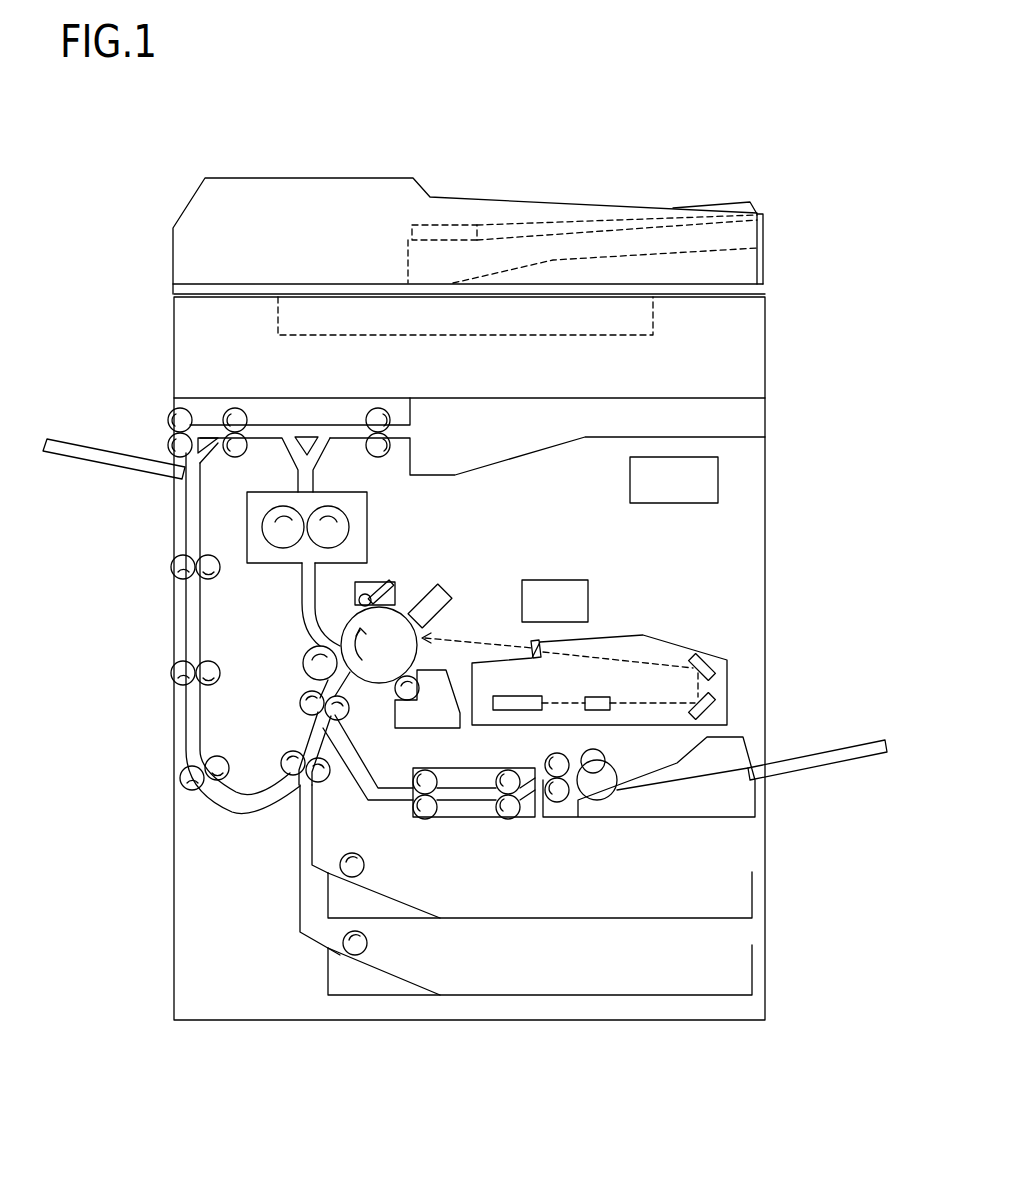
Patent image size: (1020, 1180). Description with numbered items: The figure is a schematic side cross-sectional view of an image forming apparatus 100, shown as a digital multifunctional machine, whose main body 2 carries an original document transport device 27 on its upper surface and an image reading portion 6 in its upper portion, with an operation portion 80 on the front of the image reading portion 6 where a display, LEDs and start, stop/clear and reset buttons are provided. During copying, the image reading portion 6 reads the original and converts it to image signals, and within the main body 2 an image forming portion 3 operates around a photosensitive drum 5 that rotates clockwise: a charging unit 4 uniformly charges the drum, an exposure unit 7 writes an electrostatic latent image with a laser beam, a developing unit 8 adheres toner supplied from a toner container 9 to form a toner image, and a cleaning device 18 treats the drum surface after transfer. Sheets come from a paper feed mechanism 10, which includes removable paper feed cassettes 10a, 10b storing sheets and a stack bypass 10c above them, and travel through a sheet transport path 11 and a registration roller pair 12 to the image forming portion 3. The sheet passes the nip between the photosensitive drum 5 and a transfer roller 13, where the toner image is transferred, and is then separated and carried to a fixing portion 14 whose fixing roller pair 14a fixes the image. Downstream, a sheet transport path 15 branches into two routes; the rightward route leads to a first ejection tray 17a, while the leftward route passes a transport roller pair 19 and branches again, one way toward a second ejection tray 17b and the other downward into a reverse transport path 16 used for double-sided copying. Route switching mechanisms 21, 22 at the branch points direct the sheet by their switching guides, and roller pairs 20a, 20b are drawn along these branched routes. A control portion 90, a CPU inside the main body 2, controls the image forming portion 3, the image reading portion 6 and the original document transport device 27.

The image forming apparatus 100 is at (679, 169).
The main body 2 is at (767, 543).
The original document transport device 27 is at (213, 211).
The image reading portion 6 is at (187, 355).
The operation portion 80 is at (592, 340).
The sheet transport path 15 is at (297, 472).
The first ejection tray 17a is at (547, 447).
The route switching mechanism 21 is at (302, 437).
The route switching mechanism 22 is at (197, 446).
The transport roller pair 19 is at (237, 413).
The discharge roller pair 20a is at (383, 418).
The feed roller pair 20b is at (167, 433).
The second ejection tray 17b is at (90, 452).
The reverse transport path 16 is at (193, 608).
The fixing portion 14 is at (243, 523).
The fixing roller pair 14a is at (343, 528).
The registration roller pair 12 is at (312, 713).
The transfer roller 13 is at (307, 668).
The sheet transport path 11 is at (302, 810).
The image forming portion 3 is at (432, 566).
The photosensitive drum 5 is at (367, 672).
The charging unit 4 is at (433, 603).
The cleaning device 18 is at (377, 583).
The developing unit 8 is at (427, 715).
The exposure unit 7 is at (623, 650).
The toner container 9 is at (557, 590).
The control portion 90 is at (718, 478).
The stack bypass 10c is at (790, 748).
The paper feed mechanism 10 is at (783, 845).
The paper feed cassette 10a is at (735, 900).
The paper feed cassette 10b is at (742, 977).